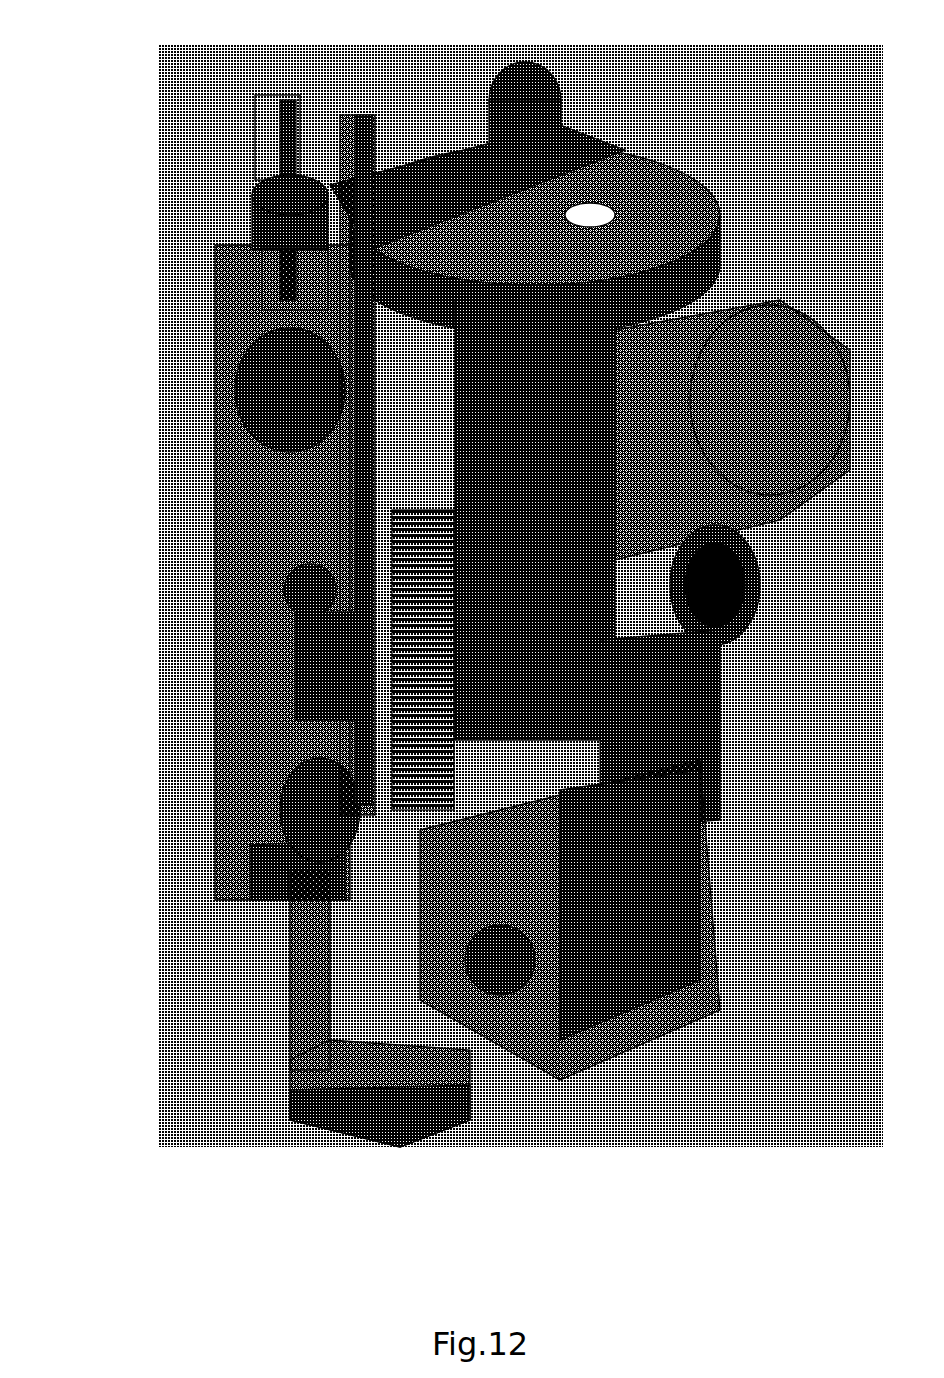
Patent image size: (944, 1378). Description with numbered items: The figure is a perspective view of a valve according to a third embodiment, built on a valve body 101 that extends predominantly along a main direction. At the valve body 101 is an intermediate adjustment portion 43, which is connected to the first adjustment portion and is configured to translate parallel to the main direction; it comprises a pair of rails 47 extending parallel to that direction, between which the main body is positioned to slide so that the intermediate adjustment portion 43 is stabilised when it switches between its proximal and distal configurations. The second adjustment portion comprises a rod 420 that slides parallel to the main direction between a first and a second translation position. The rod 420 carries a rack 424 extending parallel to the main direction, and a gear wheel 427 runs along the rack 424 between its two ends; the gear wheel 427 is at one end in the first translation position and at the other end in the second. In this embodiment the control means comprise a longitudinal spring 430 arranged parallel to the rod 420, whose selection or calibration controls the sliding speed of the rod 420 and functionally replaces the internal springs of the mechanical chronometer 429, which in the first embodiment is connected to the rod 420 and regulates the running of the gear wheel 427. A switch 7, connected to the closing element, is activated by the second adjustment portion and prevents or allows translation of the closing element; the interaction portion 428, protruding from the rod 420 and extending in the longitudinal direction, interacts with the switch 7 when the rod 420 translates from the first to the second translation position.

The switch 7 is at (528, 1063).
The intermediate adjustment portion 43 is at (440, 176).
The pair of rails 47 is at (268, 144).
The valve body 101 is at (230, 485).
The rod 420 is at (293, 302).
The rack 424 is at (343, 665).
The gear wheel 427 is at (303, 590).
The interaction portion 428 is at (303, 1100).
The mechanical chronometer 429 is at (560, 612).
The longitudinal spring 430 is at (408, 765).